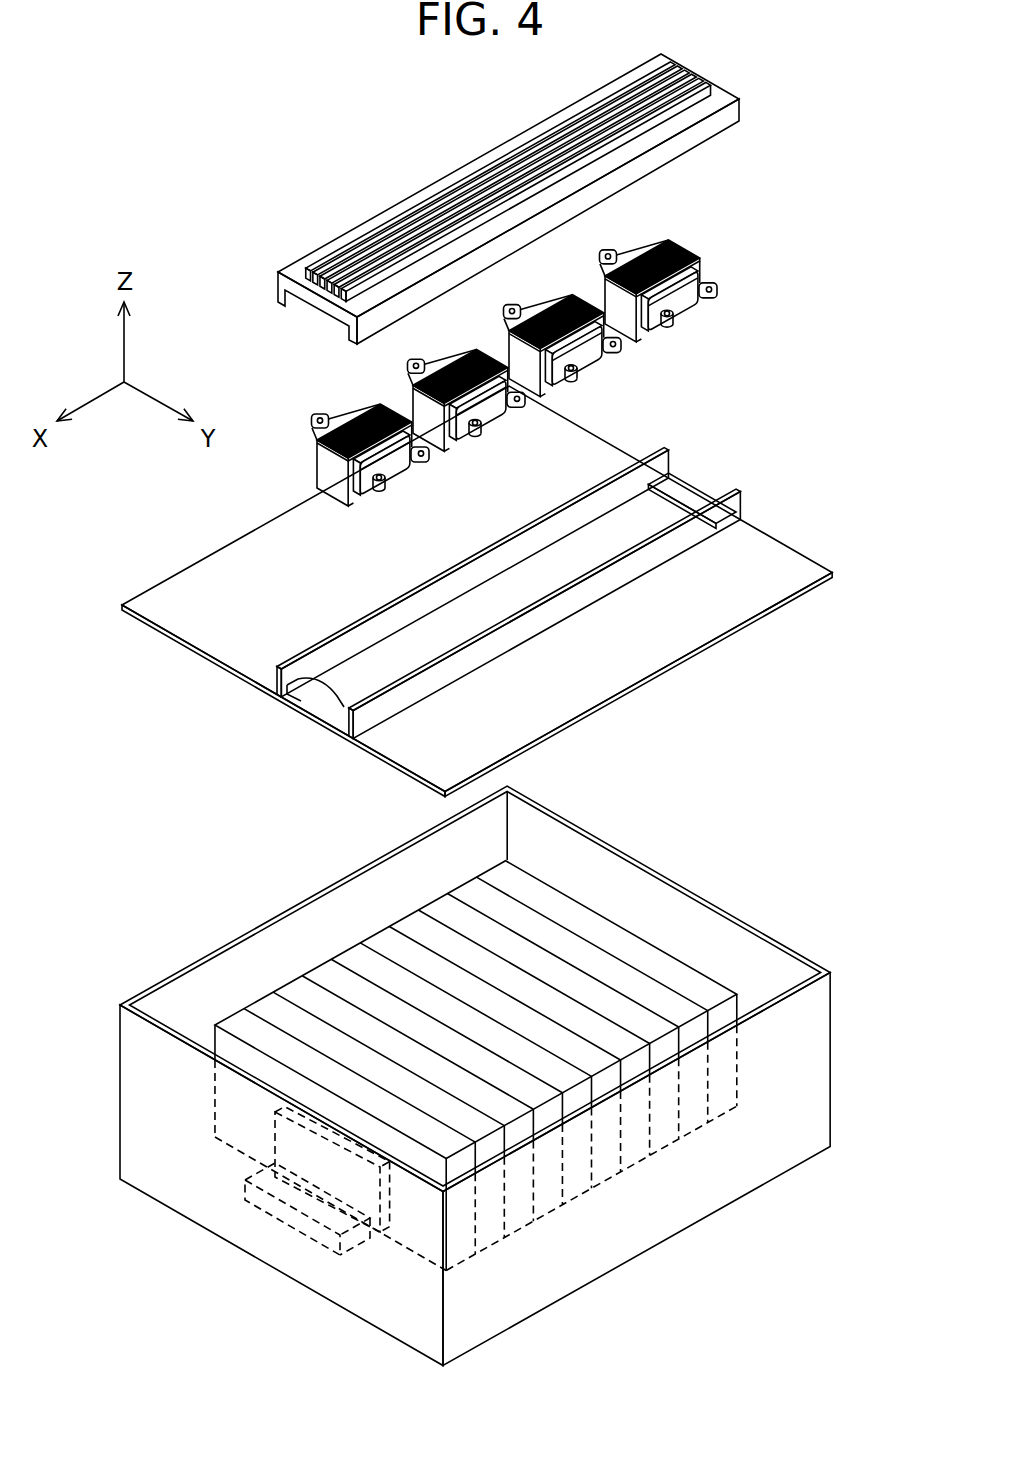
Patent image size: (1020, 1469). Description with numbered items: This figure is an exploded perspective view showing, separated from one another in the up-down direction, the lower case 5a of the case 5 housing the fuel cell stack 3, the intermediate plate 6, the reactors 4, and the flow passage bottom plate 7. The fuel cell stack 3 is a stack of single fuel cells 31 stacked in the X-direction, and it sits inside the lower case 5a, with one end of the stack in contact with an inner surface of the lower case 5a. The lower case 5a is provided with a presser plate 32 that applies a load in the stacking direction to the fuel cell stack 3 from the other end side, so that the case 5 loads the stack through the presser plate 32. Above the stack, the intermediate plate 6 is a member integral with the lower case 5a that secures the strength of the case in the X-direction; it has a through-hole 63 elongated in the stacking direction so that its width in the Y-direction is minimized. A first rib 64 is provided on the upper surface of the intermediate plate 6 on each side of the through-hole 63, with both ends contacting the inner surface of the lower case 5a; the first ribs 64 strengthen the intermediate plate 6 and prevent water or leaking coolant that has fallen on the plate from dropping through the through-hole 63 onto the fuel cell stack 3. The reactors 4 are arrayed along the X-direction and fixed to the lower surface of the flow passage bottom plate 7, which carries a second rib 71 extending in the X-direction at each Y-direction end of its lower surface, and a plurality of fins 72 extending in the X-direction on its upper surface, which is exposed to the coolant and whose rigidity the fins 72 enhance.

The fuel cell stack 3 is at (475, 1063).
The single fuel cells 31 is at (560, 910).
The presser plate 32 is at (285, 1212).
The reactors 4 is at (402, 477).
The case 5 is at (281, 1127).
The lower case 5a is at (162, 1070).
The intermediate plate 6 is at (483, 591).
The through-hole 63 is at (297, 679).
The first rib 64 is at (727, 510).
The flow passage bottom plate 7 is at (508, 199).
The second rib 71 is at (348, 338).
The fins 72 is at (732, 78).